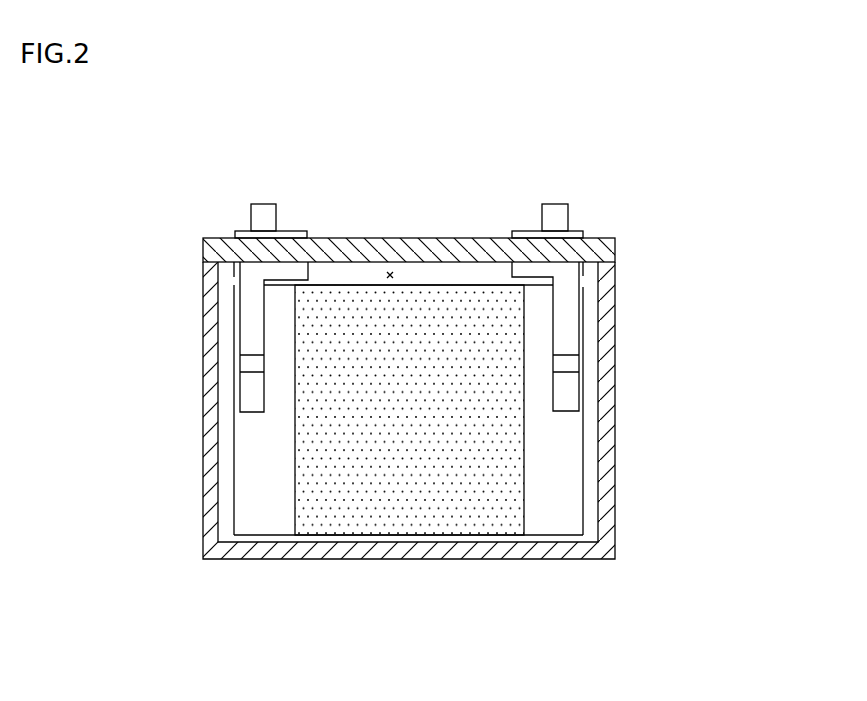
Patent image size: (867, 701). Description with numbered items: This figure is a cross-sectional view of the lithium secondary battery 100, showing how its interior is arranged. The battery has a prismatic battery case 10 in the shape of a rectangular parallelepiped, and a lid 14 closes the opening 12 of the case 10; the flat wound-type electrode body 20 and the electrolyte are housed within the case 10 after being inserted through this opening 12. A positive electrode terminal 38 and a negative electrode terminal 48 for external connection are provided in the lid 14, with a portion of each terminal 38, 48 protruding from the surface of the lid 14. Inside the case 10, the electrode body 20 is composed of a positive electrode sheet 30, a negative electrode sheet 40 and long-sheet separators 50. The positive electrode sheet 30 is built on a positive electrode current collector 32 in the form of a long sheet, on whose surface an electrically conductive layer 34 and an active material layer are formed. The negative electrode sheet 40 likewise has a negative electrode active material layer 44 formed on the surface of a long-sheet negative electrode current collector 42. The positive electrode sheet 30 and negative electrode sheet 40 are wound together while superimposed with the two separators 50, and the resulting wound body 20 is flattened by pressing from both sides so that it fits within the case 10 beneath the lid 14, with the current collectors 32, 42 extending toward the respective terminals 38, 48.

The lithium secondary battery 100 is at (172, 120).
The battery case 10 is at (618, 502).
The opening 12 is at (392, 270).
The lid 14 is at (347, 237).
The wound-type electrode body 20 is at (418, 407).
The positive electrode sheet 30 is at (299, 452).
The positive electrode current collector 32 is at (263, 525).
The electrically conductive layer 34 is at (356, 500).
The positive electrode terminal 38 is at (260, 210).
The negative electrode sheet 40 is at (535, 446).
The negative electrode current collector 42 is at (550, 527).
The negative electrode active material layer 44 is at (494, 500).
The negative electrode terminal 48 is at (555, 210).
The separator 50 is at (421, 520).